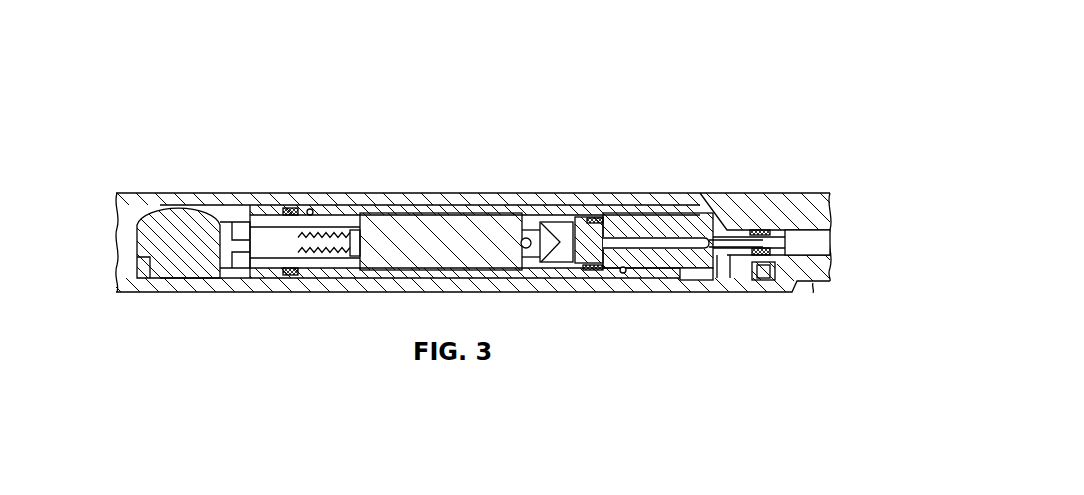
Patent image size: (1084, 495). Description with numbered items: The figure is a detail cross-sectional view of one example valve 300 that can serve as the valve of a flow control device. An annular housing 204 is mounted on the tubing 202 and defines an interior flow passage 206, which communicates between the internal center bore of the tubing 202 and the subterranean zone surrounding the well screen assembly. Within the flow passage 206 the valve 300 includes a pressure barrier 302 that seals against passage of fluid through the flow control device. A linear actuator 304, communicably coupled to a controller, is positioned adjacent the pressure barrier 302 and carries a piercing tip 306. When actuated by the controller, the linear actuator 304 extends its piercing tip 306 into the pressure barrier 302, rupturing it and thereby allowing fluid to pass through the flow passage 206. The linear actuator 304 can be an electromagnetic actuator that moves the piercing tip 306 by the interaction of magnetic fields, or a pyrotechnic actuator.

The tubing 202 is at (247, 287).
The annular housing 204 is at (722, 197).
The interior flow passage 206 is at (814, 243).
The valve 300 is at (543, 172).
The pressure barrier 302 is at (597, 220).
The linear actuator 304 is at (423, 237).
The piercing tip 306 is at (543, 250).